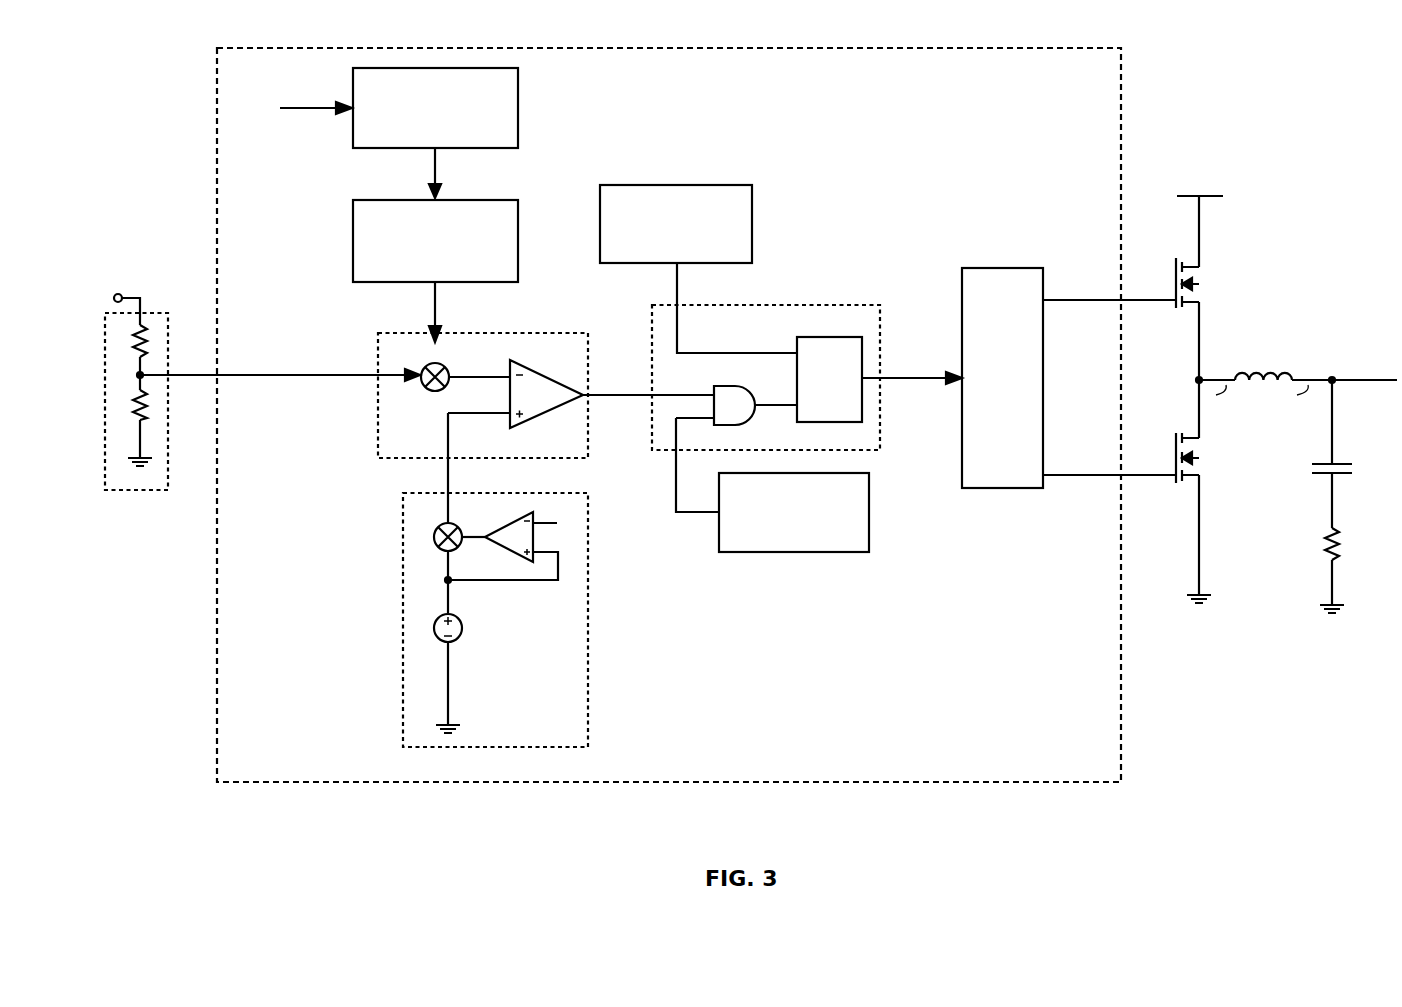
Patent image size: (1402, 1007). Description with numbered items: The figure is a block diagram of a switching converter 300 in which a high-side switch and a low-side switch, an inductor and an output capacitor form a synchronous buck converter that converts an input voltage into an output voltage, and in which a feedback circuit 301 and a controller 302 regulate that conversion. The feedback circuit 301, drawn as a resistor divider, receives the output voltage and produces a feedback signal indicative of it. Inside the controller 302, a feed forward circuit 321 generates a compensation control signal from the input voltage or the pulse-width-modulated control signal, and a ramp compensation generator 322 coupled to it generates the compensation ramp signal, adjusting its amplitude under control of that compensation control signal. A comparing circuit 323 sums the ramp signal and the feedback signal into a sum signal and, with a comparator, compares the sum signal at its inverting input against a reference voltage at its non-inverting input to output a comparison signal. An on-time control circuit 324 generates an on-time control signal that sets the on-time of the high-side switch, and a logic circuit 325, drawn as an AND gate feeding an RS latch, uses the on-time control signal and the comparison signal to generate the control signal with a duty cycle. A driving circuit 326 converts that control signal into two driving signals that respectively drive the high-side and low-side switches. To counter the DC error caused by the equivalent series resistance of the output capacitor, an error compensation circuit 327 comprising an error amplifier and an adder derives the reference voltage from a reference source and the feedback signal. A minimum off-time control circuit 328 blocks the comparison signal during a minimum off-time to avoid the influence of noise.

The switching converter 300 is at (1275, 112).
The feedback circuit 301 is at (125, 490).
The controller 302 is at (258, 782).
The feed forward circuit 321 is at (400, 150).
The ramp compensation generator 322 is at (400, 284).
The comparing circuit 323 is at (410, 462).
The on-time control circuit 324 is at (645, 263).
The logic circuit 325 is at (665, 455).
The driving circuit 326 is at (977, 492).
The error compensation circuit 327 is at (427, 750).
The minimum off-time control circuit 328 is at (740, 552).